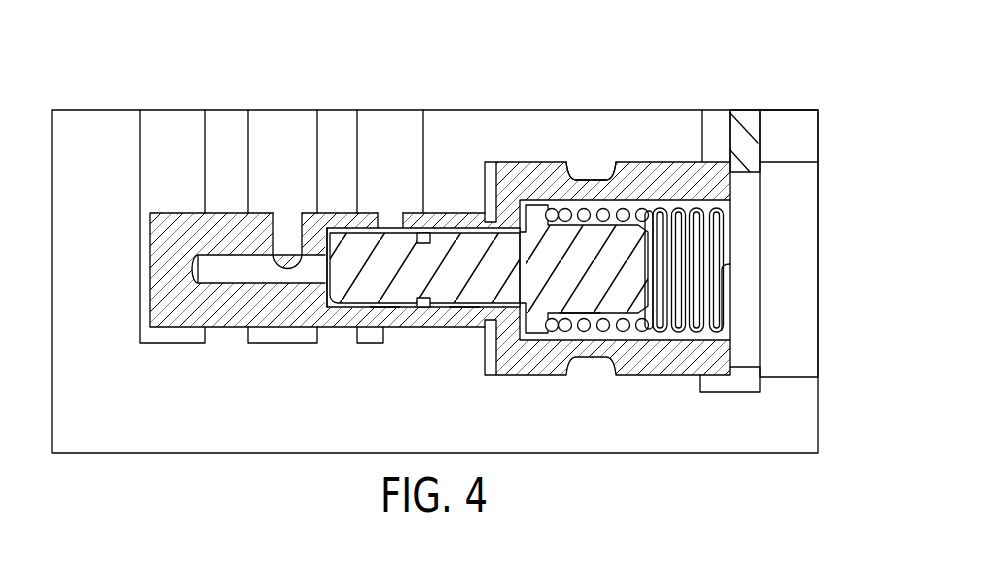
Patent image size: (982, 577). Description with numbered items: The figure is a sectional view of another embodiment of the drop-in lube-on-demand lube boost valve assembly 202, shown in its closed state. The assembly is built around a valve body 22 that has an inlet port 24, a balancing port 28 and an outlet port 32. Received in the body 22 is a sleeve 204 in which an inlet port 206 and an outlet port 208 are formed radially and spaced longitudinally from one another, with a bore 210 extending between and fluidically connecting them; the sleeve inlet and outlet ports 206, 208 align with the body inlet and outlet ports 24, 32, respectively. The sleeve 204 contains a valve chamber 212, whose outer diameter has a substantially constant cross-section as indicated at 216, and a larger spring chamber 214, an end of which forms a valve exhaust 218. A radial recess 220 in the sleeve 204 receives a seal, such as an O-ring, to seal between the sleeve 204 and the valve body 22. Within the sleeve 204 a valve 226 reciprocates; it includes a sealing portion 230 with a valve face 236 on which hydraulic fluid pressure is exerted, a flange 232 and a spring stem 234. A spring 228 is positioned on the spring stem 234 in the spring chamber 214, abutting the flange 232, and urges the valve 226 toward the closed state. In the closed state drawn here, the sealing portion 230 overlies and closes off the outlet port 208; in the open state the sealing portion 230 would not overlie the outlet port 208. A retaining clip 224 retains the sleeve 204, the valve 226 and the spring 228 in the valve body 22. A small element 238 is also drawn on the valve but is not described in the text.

The body 22 is at (103, 118).
The balancing port 28 is at (188, 118).
The inlet port 24 is at (270, 118).
The outlet port 32 is at (388, 118).
The inlet port 206 is at (280, 222).
The outlet port 208 is at (388, 215).
The bore 210 is at (238, 270).
The sleeve 204 is at (645, 170).
The radial recess 220 is at (590, 170).
The spring chamber 214 is at (645, 318).
The sealing portion 230 is at (383, 282).
The valve chamber 212 is at (347, 305).
The valve face 236 is at (323, 270).
The substantially constant cross-section 216 is at (388, 305).
The seal 238 is at (425, 305).
The valve 226 is at (465, 305).
The flange 232 is at (537, 213).
The spring stem 234 is at (578, 304).
The spring 228 is at (697, 333).
The retaining clip 224 is at (742, 113).
The valve exhaust 218 is at (750, 277).
The lube boost valve assembly 202 is at (456, 232).